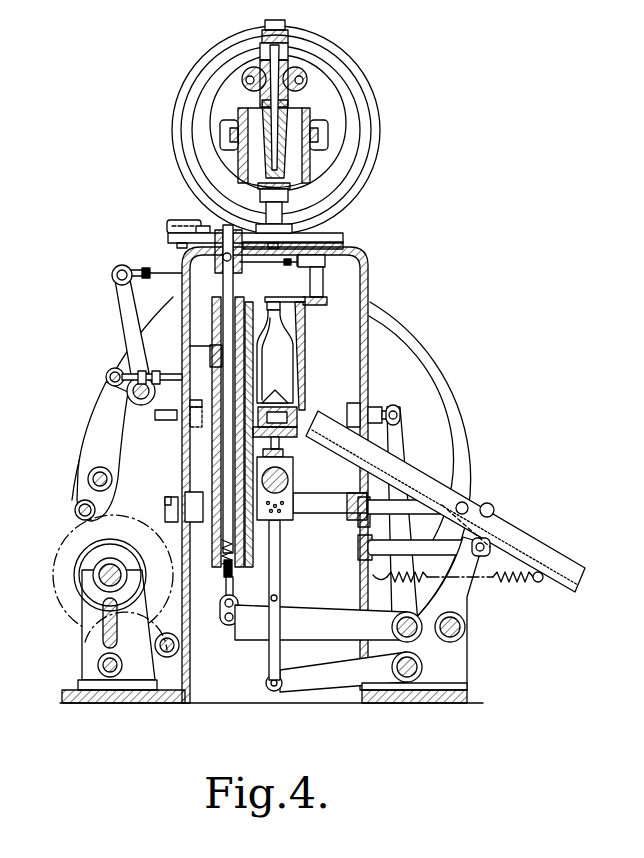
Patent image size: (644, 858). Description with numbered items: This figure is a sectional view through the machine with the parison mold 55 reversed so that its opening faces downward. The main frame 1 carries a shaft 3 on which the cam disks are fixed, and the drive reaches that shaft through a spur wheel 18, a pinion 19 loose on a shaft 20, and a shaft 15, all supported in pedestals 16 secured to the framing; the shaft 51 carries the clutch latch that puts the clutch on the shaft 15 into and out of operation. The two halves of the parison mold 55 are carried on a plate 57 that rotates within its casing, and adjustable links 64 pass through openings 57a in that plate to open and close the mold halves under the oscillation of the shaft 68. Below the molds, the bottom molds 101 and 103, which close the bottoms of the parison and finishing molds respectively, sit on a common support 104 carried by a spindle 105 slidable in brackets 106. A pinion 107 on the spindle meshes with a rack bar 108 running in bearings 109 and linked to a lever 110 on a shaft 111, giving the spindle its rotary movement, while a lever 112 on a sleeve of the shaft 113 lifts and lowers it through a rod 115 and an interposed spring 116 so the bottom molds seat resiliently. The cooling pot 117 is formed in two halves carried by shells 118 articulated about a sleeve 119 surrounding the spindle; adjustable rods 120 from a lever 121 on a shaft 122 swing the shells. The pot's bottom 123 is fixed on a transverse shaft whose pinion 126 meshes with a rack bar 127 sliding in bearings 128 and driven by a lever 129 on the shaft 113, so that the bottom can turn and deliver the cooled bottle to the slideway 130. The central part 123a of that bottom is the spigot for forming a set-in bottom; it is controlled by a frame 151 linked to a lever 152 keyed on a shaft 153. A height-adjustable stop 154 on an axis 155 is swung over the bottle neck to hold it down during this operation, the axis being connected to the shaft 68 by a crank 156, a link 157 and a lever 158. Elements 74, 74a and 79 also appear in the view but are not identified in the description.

The main frame 1 is at (370, 258).
The shaft 3 is at (279, 478).
The shaft 15 is at (105, 573).
The pedestals 16 is at (95, 603).
The spur wheel 18 is at (72, 548).
The pinion 19 is at (97, 650).
The shaft 20 is at (103, 668).
The shaft 51 is at (75, 515).
The parison mold 55 is at (296, 122).
The plate 57 is at (318, 113).
The openings 57a is at (224, 128).
The adjustable links 64 is at (228, 142).
The shaft 68 is at (133, 392).
The collar 74 is at (252, 74).
The collar 74a is at (300, 72).
The hand wheel 79 is at (358, 165).
The bottom mold 101 is at (282, 194).
The bottom mold 103 is at (167, 225).
The common support 104 is at (203, 229).
The spindle 105 is at (230, 285).
The brackets 106 is at (219, 432).
The pinion 107 is at (186, 490).
The rack bar 108 is at (306, 511).
The bearings 109 is at (174, 518).
The lever 110 is at (460, 593).
The shaft 111 is at (465, 627).
The lever 112 is at (321, 622).
The shaft 113 is at (413, 632).
The rod 115 is at (234, 583).
The spring 116 is at (220, 568).
The cooling pot 117 is at (292, 332).
The shells 118 is at (282, 398).
The sleeve 119 is at (212, 354).
The rods 120 is at (183, 390).
The lever 121 is at (118, 422).
The shaft 122 is at (90, 480).
The bottom of the cooling pot 123 is at (369, 302).
The spigot 123a is at (369, 318).
The pinion 126 is at (300, 410).
The rack bar 127 is at (370, 378).
The bearings 128 is at (200, 408).
The lever 129 is at (394, 437).
The slideway 130 is at (533, 558).
The frame 151 is at (286, 515).
The lever 152 is at (322, 662).
The shaft 153 is at (411, 680).
The stop 154 is at (325, 298).
The axis 155 is at (363, 256).
The crank 156 is at (318, 280).
The link 157 is at (157, 274).
The lever 158 is at (129, 321).